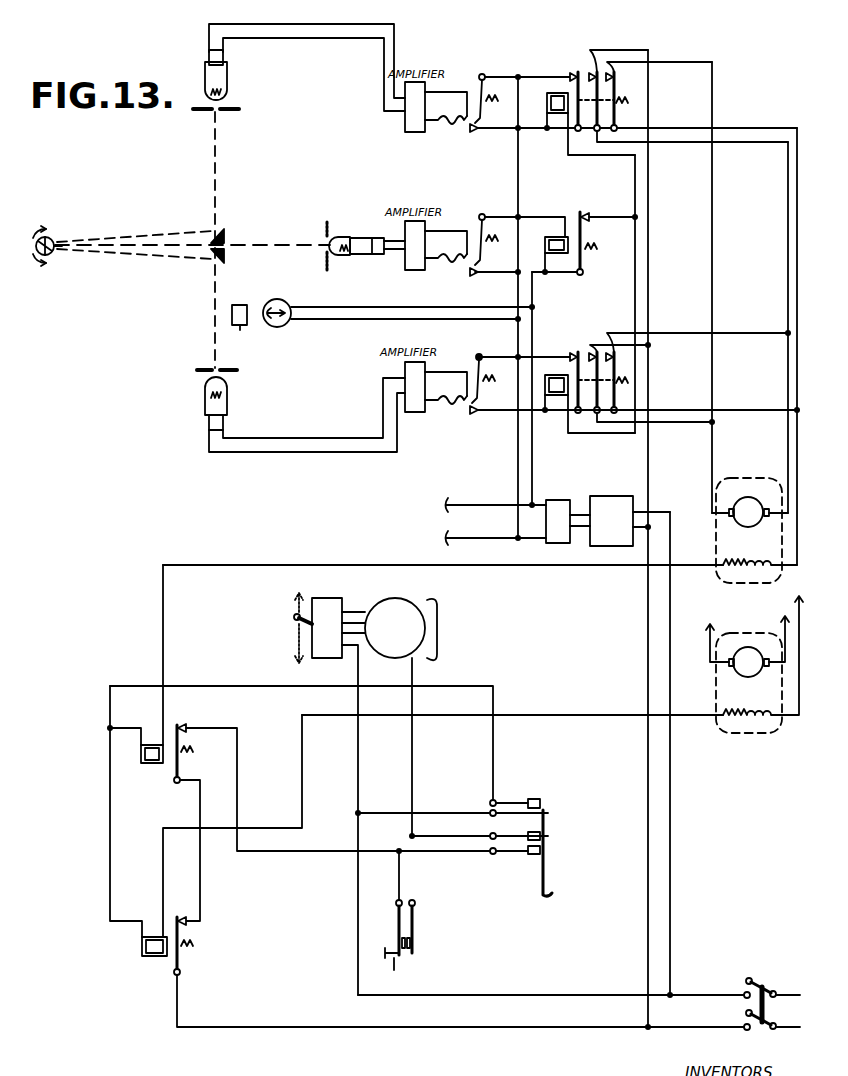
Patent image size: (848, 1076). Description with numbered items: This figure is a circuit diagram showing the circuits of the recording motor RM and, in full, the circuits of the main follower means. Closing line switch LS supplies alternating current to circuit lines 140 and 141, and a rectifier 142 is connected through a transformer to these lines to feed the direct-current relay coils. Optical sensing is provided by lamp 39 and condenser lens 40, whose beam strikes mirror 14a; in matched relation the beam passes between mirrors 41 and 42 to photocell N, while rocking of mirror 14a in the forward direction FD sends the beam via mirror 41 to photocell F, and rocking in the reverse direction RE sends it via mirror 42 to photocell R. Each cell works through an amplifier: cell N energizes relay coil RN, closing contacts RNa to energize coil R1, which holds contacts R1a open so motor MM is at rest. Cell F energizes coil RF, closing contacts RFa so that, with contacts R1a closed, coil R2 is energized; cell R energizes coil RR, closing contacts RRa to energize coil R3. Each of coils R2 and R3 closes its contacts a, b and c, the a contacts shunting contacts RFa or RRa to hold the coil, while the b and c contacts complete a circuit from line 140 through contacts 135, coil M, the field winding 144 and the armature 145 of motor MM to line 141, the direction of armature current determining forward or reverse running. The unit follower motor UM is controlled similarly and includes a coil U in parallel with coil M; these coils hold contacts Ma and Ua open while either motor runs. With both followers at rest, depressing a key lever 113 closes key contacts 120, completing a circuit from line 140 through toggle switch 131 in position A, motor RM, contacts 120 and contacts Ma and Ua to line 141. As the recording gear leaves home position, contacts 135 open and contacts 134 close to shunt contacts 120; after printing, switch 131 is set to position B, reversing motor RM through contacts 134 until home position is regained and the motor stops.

The photocell F is at (227, 87).
The photocell R is at (228, 403).
The photocell N is at (371, 240).
The reverse direction RE is at (51, 239).
The forward direction FD is at (51, 264).
The mirror 14a is at (62, 244).
The mirror 41 is at (217, 232).
The mirror 42 is at (217, 258).
The condenser lens 40 is at (240, 326).
The lamp 39 is at (287, 306).
The relay coil RF is at (455, 129).
The relay contacts RFa is at (482, 131).
The relay coil RN is at (455, 268).
The relay contacts RNa is at (482, 274).
The relay coil RR is at (455, 409).
The relay contacts RRa is at (481, 414).
The relay coil R1 is at (556, 240).
The relay contacts R1a is at (582, 212).
The relay coil R2 is at (552, 97).
The relay coil R3 is at (557, 386).
The relay contacts a is at (576, 72).
The relay contacts b is at (597, 62).
The relay contacts c is at (616, 72).
The rectifier 142 is at (558, 505).
The armature 145 is at (748, 510).
The field winding 144 is at (763, 572).
The main follower motor MM is at (754, 530).
The unit follower motor UM is at (754, 664).
The toggle switch 131 is at (319, 628).
The recording motor RM is at (389, 629).
The switch position A is at (297, 594).
The switch position B is at (297, 654).
The coil M is at (152, 765).
The contacts Ma is at (181, 726).
The coil U is at (157, 958).
The contacts Ua is at (181, 918).
The contacts 135 is at (550, 806).
The contacts 134 is at (528, 852).
The key contacts 120 is at (414, 936).
The key lever 113 is at (388, 921).
The circuit line 140 is at (532, 995).
The circuit line 141 is at (508, 1027).
The line switch LS is at (765, 985).